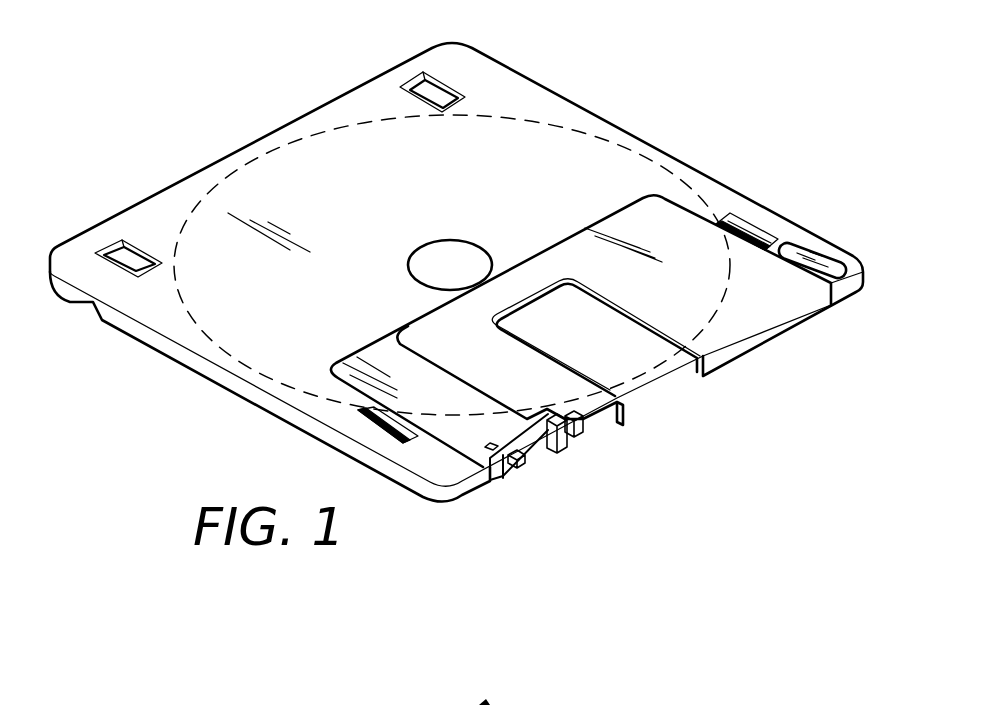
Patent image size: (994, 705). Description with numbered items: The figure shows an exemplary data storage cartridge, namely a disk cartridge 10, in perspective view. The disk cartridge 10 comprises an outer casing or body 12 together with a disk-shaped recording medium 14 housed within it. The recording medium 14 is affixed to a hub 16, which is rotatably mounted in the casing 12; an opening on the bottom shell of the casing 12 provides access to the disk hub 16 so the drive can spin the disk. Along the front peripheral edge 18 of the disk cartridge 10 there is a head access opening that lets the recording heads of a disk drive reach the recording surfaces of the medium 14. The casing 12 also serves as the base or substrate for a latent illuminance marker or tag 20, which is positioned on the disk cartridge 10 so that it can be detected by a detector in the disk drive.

The disk cartridge 10 is at (168, 447).
The outer casing 12 is at (560, 96).
The disk-shaped recording medium 14 is at (658, 365).
The hub 16 is at (443, 262).
The front peripheral edge 18 is at (633, 393).
The latent illuminance marker 20 is at (823, 268).